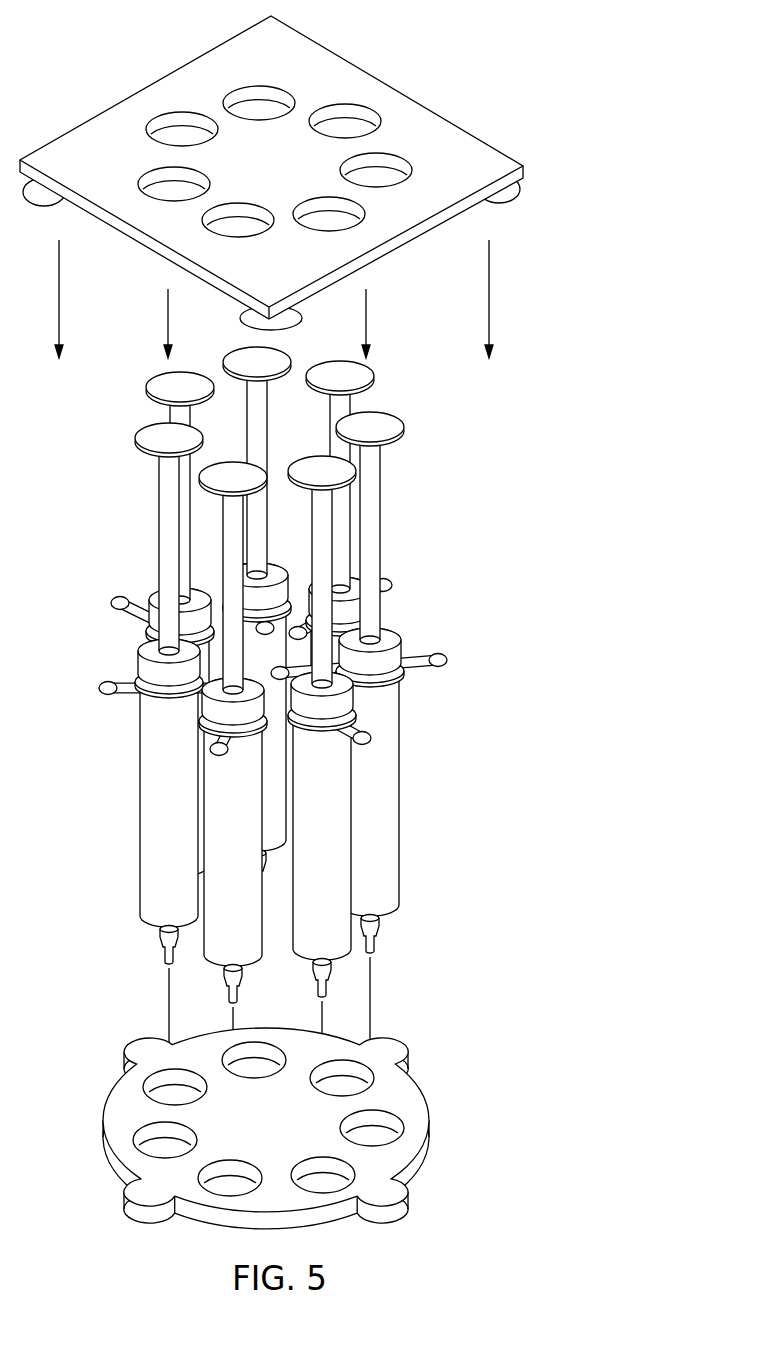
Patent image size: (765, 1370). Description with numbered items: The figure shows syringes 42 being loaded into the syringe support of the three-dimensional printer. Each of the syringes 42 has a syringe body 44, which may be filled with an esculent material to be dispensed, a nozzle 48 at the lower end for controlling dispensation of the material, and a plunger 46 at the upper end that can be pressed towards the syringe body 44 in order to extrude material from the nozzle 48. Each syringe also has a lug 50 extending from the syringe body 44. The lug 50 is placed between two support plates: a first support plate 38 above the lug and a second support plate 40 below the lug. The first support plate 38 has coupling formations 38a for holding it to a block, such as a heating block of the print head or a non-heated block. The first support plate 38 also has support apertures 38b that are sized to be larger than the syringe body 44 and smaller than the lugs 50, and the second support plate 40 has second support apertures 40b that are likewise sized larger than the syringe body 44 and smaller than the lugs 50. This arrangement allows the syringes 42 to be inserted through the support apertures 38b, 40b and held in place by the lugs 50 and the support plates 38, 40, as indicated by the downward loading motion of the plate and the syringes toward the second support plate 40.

The first support plate 38 is at (310, 173).
The coupling formations 38a is at (516, 194).
The support apertures 38b is at (350, 118).
The second support plate 40 is at (302, 1128).
The second support apertures 40b is at (328, 1178).
The syringes 42 is at (304, 675).
The syringe body 44 is at (390, 858).
The plunger 46 is at (382, 432).
The nozzle 48 is at (378, 930).
The lug 50 is at (440, 660).